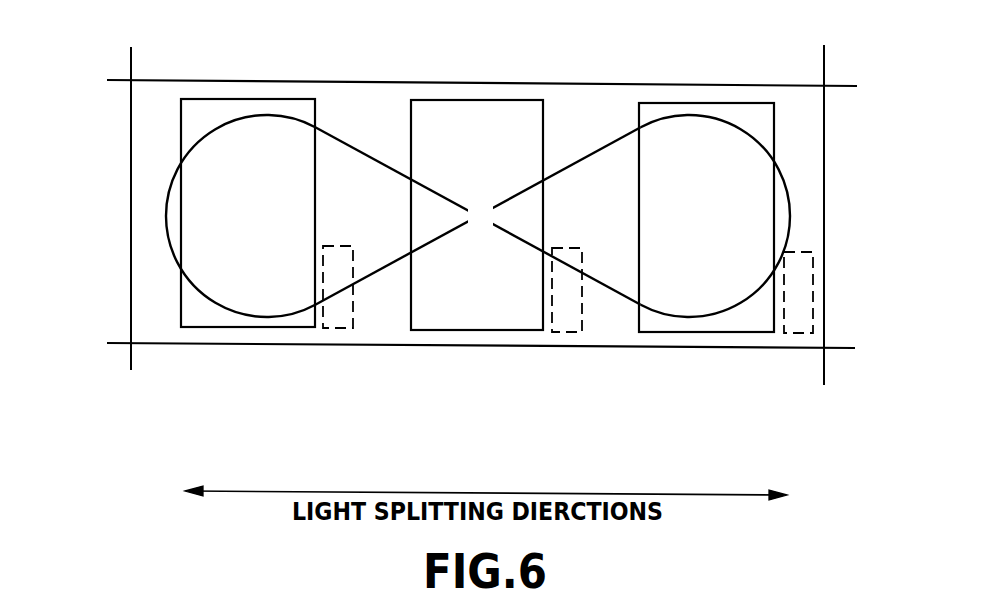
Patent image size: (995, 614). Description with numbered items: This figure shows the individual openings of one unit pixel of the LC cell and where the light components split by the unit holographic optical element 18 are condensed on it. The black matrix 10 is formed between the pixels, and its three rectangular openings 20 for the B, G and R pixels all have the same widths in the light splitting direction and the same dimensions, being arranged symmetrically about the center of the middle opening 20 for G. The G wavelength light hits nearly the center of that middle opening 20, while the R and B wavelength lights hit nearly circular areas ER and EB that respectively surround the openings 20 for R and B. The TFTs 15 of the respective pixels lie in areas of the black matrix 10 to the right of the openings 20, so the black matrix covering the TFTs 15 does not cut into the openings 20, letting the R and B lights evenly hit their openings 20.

The black matrix 10 is at (378, 100).
The TFT 15 is at (339, 320).
The unit holographic optical element 18 is at (604, 88).
The opening 20 is at (315, 160).
The area hit by B wavelength light EB is at (168, 232).
The area hit by R wavelength light ER is at (790, 197).